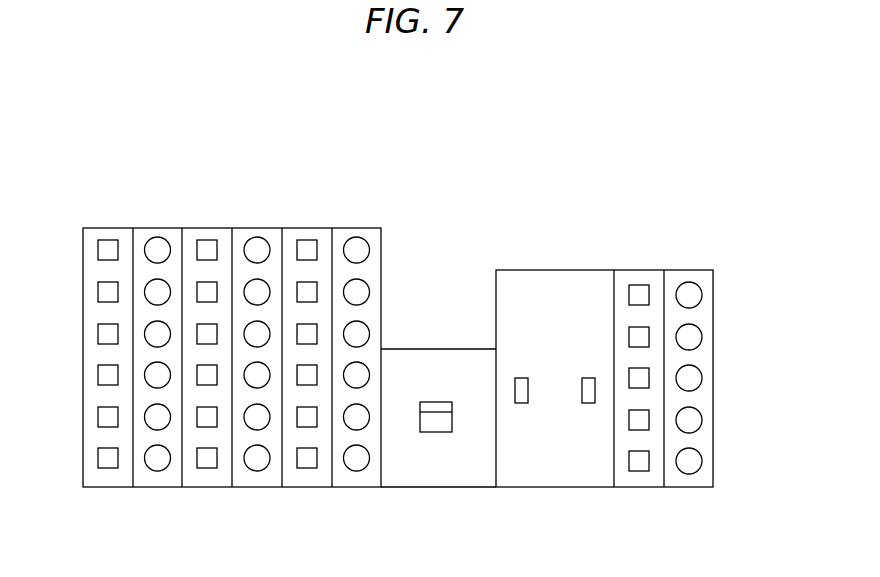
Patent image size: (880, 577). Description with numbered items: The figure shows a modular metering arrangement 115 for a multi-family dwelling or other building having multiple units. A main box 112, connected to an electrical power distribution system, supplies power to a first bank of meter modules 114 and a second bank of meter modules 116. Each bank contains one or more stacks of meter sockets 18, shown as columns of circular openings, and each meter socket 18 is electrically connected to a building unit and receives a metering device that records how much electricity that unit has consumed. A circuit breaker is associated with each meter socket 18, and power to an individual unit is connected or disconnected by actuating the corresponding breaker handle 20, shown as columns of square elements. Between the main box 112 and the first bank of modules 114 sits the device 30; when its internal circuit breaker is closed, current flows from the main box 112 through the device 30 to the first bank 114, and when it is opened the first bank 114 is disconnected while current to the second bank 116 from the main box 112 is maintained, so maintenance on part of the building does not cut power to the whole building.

The meter socket 18 is at (153, 488).
The breaker handle 20 is at (105, 488).
The device 30 is at (437, 349).
The main box 112 is at (553, 270).
The first bank of meter modules 114 is at (182, 206).
The modular metering arrangement 115 is at (505, 152).
The second bank of meter modules 116 is at (632, 230).